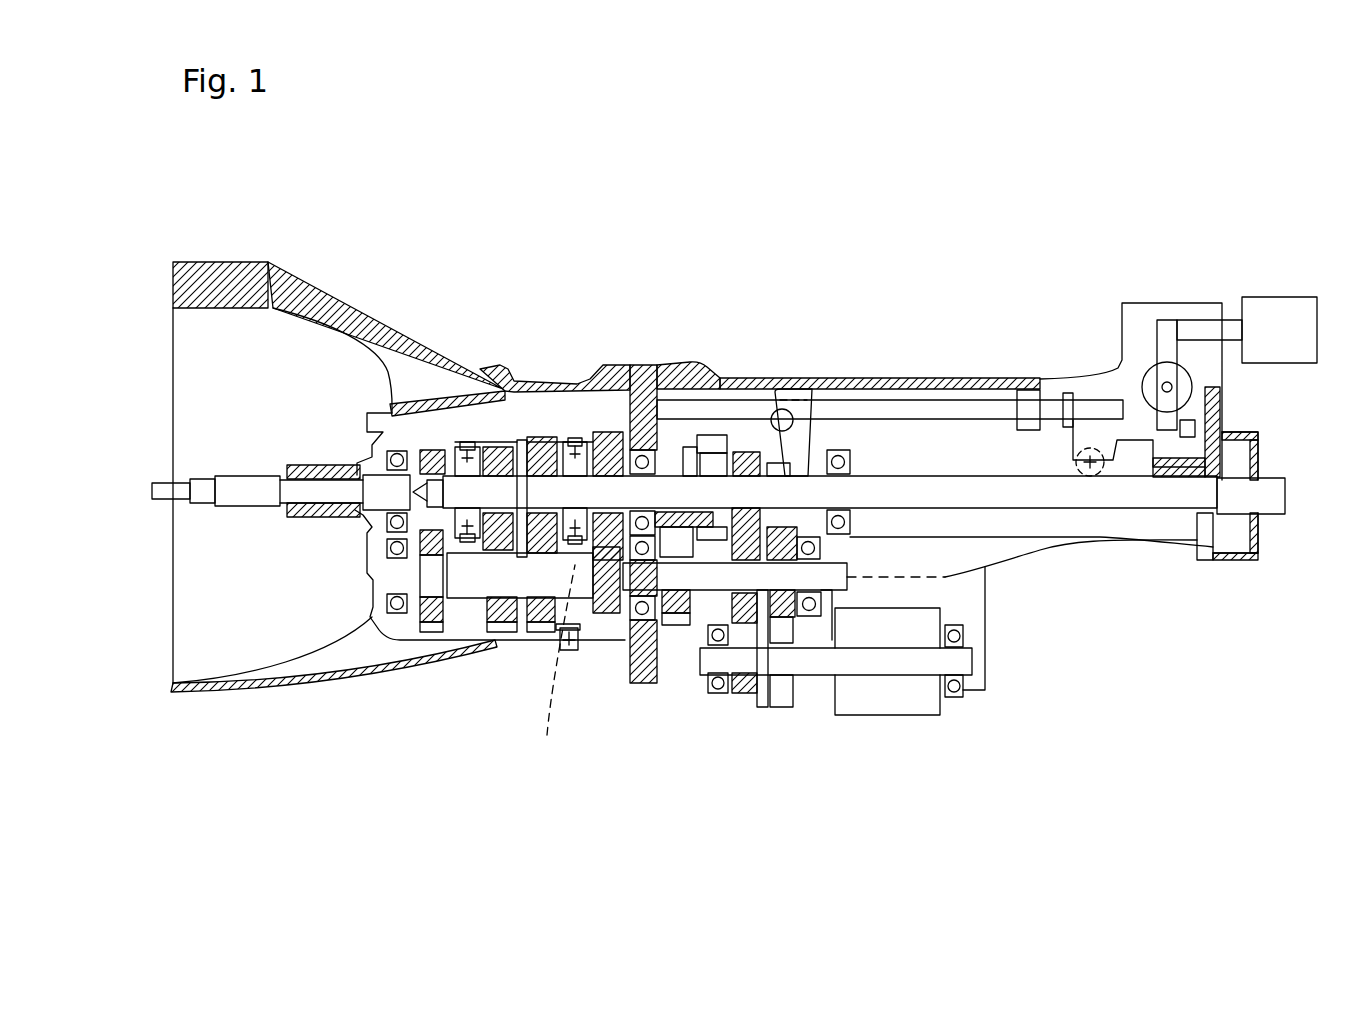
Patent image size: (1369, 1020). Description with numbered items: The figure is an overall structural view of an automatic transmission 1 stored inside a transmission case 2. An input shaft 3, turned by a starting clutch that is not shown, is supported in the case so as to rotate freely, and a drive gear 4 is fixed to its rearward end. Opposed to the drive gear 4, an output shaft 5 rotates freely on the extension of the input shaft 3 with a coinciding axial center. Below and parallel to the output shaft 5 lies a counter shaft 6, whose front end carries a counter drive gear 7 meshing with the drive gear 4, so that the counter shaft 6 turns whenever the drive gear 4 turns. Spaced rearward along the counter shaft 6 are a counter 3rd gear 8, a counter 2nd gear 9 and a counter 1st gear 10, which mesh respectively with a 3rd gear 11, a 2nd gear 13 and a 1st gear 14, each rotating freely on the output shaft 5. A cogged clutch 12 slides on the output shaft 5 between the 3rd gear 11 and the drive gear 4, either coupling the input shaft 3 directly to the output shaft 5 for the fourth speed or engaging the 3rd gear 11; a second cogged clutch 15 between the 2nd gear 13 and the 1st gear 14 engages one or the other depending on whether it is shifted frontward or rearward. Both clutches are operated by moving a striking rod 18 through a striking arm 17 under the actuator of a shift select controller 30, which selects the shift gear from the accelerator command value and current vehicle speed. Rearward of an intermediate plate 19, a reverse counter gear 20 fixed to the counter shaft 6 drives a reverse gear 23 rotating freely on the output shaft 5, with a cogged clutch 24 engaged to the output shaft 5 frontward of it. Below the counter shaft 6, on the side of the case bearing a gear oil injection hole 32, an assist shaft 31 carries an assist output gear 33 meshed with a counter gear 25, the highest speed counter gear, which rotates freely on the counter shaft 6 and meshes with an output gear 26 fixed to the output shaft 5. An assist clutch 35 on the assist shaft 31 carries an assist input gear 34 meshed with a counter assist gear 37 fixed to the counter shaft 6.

The automatic transmission 1 is at (909, 199).
The transmission case 2 is at (240, 263).
The input shaft 3 is at (250, 472).
The drive gear 4 is at (432, 452).
The output shaft 5 is at (1067, 500).
The counter shaft 6 is at (475, 583).
The counter drive gear 7 is at (432, 637).
The counter 3rd gear 8 is at (498, 643).
The counter 2nd gear 9 is at (540, 637).
The counter 1st gear 10 is at (608, 613).
The 3rd gear 11 is at (509, 440).
The cogged clutch 12 is at (469, 445).
The 2nd gear 13 is at (538, 437).
The 1st gear 14 is at (612, 430).
The cogged clutch 15 is at (575, 440).
The striking arm 17 is at (1137, 427).
The striking rod 18 is at (881, 407).
The intermediate plate 19 is at (643, 380).
The reverse counter gear 20 is at (673, 627).
The reverse gear 23 is at (713, 445).
The cogged clutch 24 is at (680, 435).
The counter gear 25 is at (735, 623).
The output gear 26 is at (751, 452).
The shift select controller 30 is at (1272, 325).
The assist shaft 31 is at (820, 675).
The gear oil injection hole 32 is at (552, 668).
The assist output gear 33 is at (752, 693).
The assist input gear 34 is at (782, 707).
The assist clutch 35 is at (892, 705).
The counter assist gear 37 is at (748, 693).